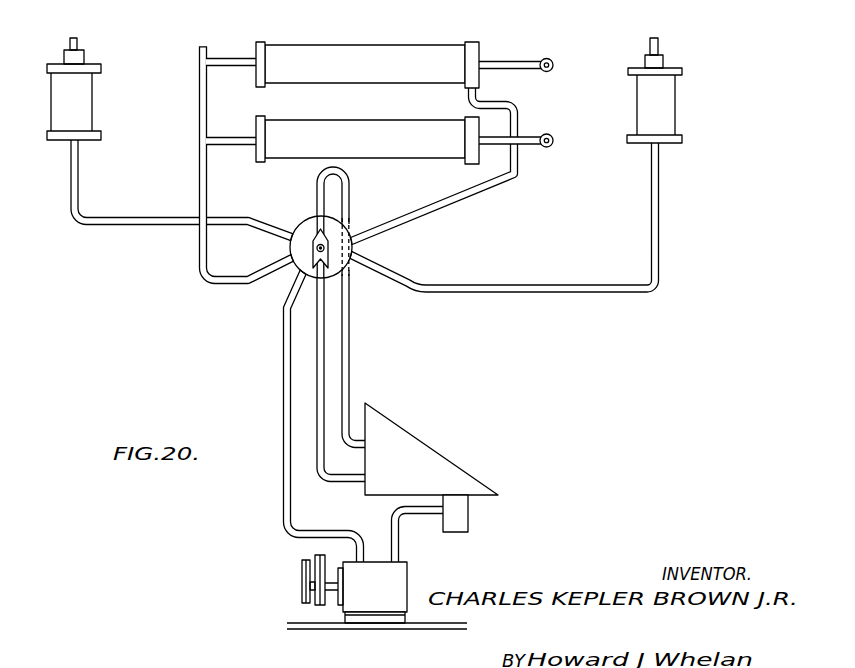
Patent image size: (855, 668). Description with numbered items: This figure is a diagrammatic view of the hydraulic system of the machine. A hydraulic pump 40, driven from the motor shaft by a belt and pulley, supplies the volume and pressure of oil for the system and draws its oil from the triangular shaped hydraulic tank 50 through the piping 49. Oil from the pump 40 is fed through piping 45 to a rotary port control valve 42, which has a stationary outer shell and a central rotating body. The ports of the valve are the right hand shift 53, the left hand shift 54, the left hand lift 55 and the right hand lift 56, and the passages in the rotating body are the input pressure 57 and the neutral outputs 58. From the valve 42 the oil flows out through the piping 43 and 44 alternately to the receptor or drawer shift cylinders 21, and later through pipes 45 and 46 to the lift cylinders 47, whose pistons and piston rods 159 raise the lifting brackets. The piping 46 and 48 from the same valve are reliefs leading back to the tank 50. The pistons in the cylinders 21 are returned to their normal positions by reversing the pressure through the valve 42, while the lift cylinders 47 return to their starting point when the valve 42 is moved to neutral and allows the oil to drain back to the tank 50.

The drawer shift cylinder 21 is at (339, 79).
The hydraulic pump 40 is at (382, 623).
The rotary port control valve 42 is at (288, 245).
The piping 43 is at (200, 168).
The piping 44 is at (420, 213).
The piping 45 is at (145, 222).
The piping 46 is at (578, 285).
The lift cylinder 47 is at (67, 94).
The piping 48 is at (349, 362).
The piping 49 is at (434, 511).
The hydraulic tank 50 is at (457, 463).
The right hand shift port 53 is at (290, 270).
The left hand shift port 54 is at (356, 218).
The left hand lift port 55 is at (295, 230).
The right hand lift port 56 is at (353, 250).
The input pressure passage 57 is at (308, 283).
The neutral output passage 58 is at (320, 191).
The piston rod 159 is at (77, 40).